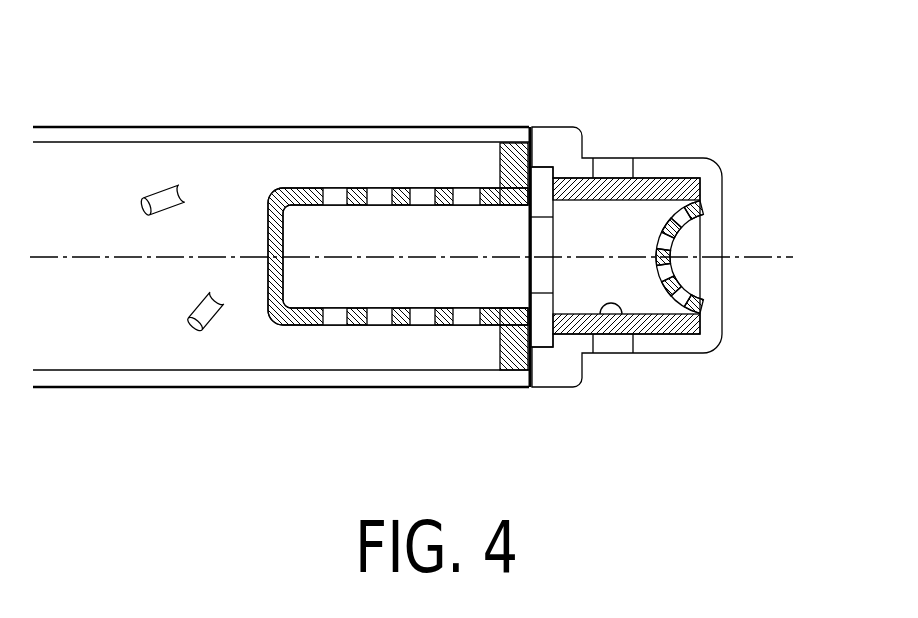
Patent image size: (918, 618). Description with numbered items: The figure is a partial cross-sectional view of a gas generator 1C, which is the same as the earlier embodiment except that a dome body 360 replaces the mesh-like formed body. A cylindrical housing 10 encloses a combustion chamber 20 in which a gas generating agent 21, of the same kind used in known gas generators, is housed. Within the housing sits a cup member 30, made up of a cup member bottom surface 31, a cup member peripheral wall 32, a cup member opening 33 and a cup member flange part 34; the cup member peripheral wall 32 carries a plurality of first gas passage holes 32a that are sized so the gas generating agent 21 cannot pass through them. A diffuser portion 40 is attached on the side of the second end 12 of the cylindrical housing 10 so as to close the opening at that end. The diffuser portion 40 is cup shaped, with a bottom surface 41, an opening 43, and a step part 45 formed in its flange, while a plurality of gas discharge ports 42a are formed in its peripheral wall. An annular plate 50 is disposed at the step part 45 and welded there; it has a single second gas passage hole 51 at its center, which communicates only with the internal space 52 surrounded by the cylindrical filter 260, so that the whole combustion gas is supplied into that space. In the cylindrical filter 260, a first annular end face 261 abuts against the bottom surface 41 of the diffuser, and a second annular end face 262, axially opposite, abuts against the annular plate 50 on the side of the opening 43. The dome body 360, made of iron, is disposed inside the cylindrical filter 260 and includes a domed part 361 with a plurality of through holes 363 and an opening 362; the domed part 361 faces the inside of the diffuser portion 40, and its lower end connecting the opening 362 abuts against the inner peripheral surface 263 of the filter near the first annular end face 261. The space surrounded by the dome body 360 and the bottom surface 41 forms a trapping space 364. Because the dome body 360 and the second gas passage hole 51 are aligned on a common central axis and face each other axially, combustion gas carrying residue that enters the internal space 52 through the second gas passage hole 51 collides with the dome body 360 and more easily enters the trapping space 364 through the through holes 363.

The gas generator 1C is at (65, 98).
The cylindrical housing 10 is at (226, 126).
The second end 12 is at (531, 127).
The combustion chamber 20 is at (70, 240).
The gas generating agent 21 is at (174, 209).
The cup member 30 is at (284, 338).
The cup member bottom surface 31 is at (268, 265).
The cup member peripheral wall 32 is at (395, 188).
The first gas passage holes 32a is at (375, 325).
The cup member opening 33 is at (553, 292).
The cup member flange part 34 is at (510, 143).
The diffuser portion 40 is at (708, 143).
The bottom surface 41 is at (655, 355).
The gas discharge ports 42a is at (612, 157).
The opening 43 is at (548, 268).
The step part 45 is at (540, 347).
The annular plate 50 is at (531, 214).
The second gas passage hole 51 is at (545, 218).
The internal space 52 is at (647, 235).
The cylindrical filter 260 is at (715, 165).
The first annular end face 261 is at (701, 188).
The second annular end face 262 is at (528, 183).
The inner peripheral surface 263 is at (621, 334).
The dome body 360 is at (808, 212).
The domed part 361 is at (701, 233).
The opening 362 is at (701, 267).
The through holes 363 is at (673, 332).
The trapping space 364 is at (690, 290).